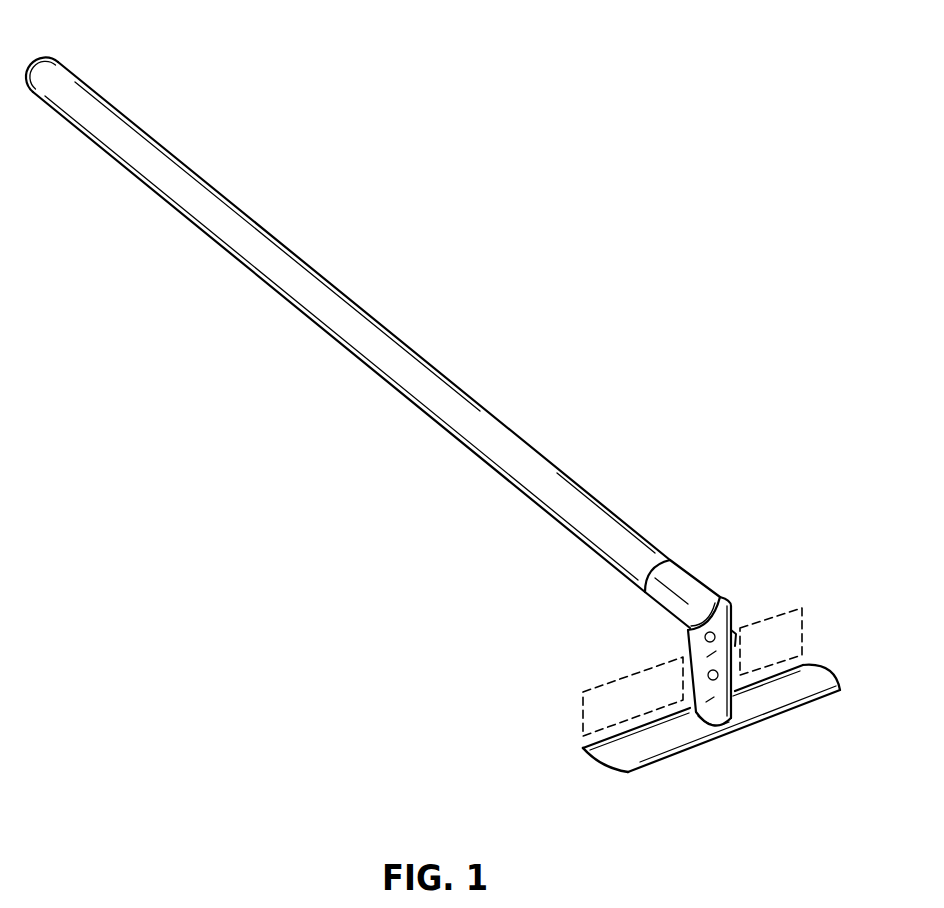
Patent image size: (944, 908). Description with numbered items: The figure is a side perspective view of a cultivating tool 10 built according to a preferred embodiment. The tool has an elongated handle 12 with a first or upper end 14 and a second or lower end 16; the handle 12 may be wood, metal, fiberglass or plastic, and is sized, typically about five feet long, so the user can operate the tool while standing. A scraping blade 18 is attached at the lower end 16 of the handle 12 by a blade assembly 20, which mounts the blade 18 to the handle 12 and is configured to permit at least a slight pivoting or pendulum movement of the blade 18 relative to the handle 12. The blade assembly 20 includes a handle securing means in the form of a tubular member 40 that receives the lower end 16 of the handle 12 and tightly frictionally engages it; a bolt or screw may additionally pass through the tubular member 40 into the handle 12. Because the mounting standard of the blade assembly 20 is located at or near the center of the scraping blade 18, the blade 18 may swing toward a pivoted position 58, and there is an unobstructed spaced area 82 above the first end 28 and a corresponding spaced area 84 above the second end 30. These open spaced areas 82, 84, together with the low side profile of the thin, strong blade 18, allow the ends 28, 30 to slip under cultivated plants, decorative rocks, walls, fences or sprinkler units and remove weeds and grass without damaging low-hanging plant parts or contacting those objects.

The cultivating tool 10 is at (441, 427).
The elongated handle 12 is at (225, 222).
The first or upper end 14 is at (72, 61).
The second or lower end 16 is at (622, 600).
The scraping blade 18 is at (683, 735).
The blade assembly 20 is at (678, 637).
The first end 28 is at (628, 776).
The second end 30 is at (839, 700).
The tubular member 40 is at (682, 582).
The pivoted position 58 is at (745, 612).
The spaced area 82 is at (600, 708).
The spaced area 84 is at (783, 630).